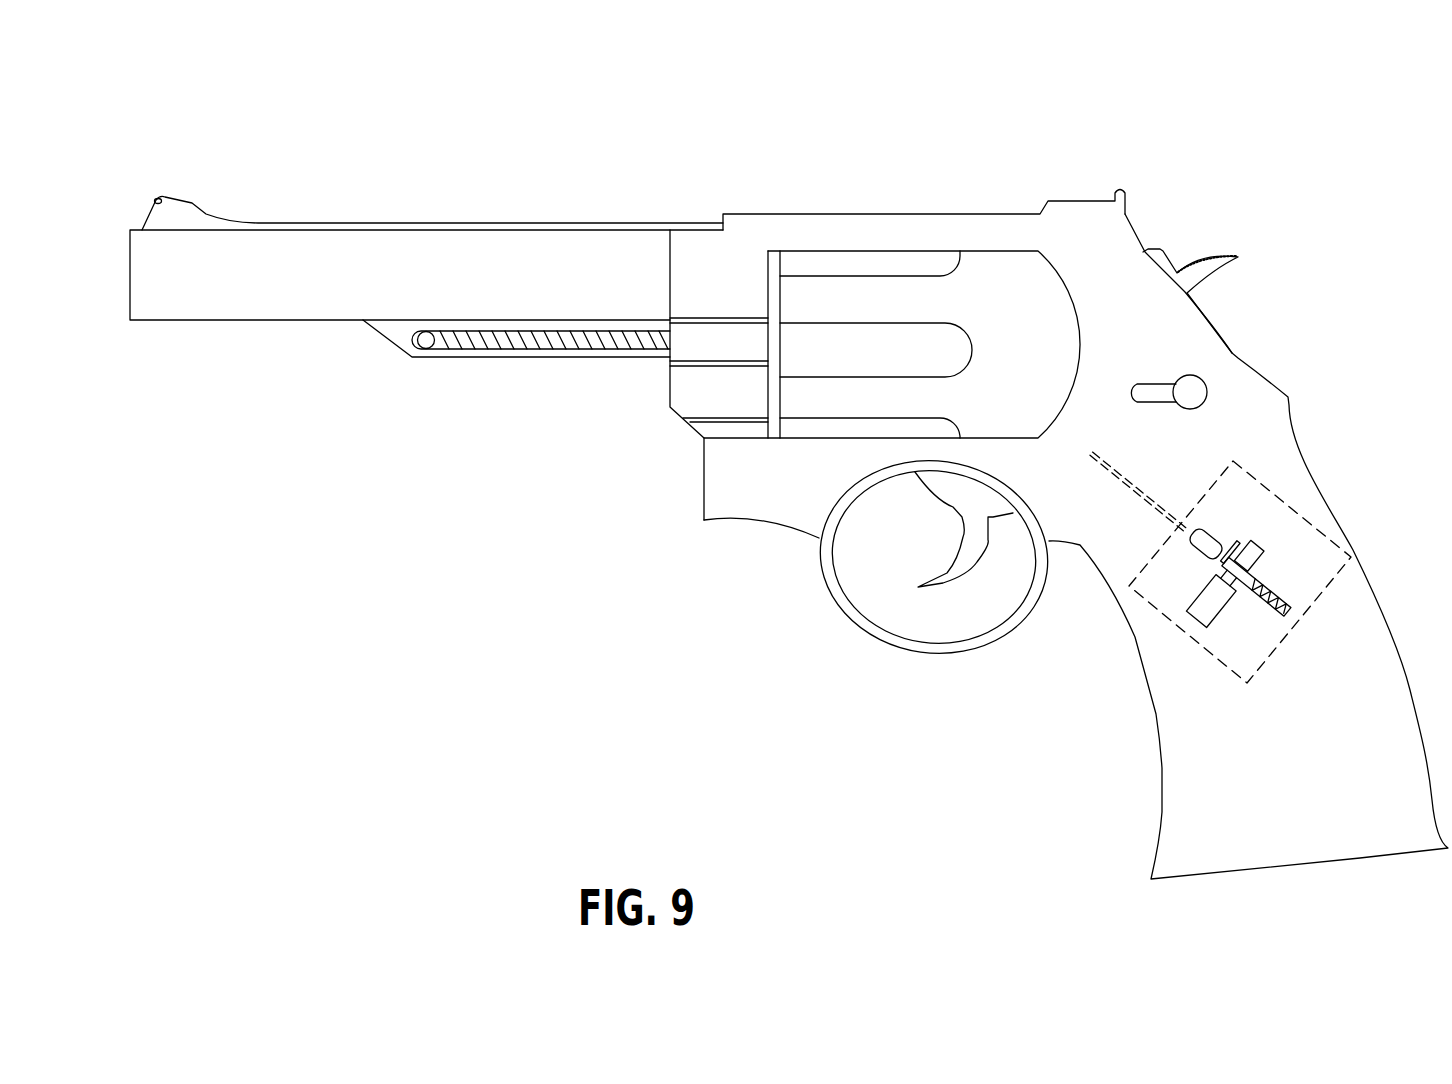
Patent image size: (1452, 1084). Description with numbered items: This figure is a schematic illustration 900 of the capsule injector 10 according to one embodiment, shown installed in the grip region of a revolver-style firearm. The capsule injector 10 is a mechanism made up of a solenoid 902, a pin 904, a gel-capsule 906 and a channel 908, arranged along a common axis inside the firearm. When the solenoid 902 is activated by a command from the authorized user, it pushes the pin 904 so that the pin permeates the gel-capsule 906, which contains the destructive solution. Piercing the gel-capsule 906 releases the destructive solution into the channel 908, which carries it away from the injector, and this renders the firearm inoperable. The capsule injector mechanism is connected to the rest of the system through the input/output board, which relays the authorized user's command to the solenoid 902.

The schematic illustration 900 is at (1352, 140).
The capsule injector 10 is at (1296, 515).
The solenoid 902 is at (1293, 614).
The pin 904 is at (1238, 586).
The gel-capsule 906 is at (1207, 534).
The channel 908 is at (1120, 477).